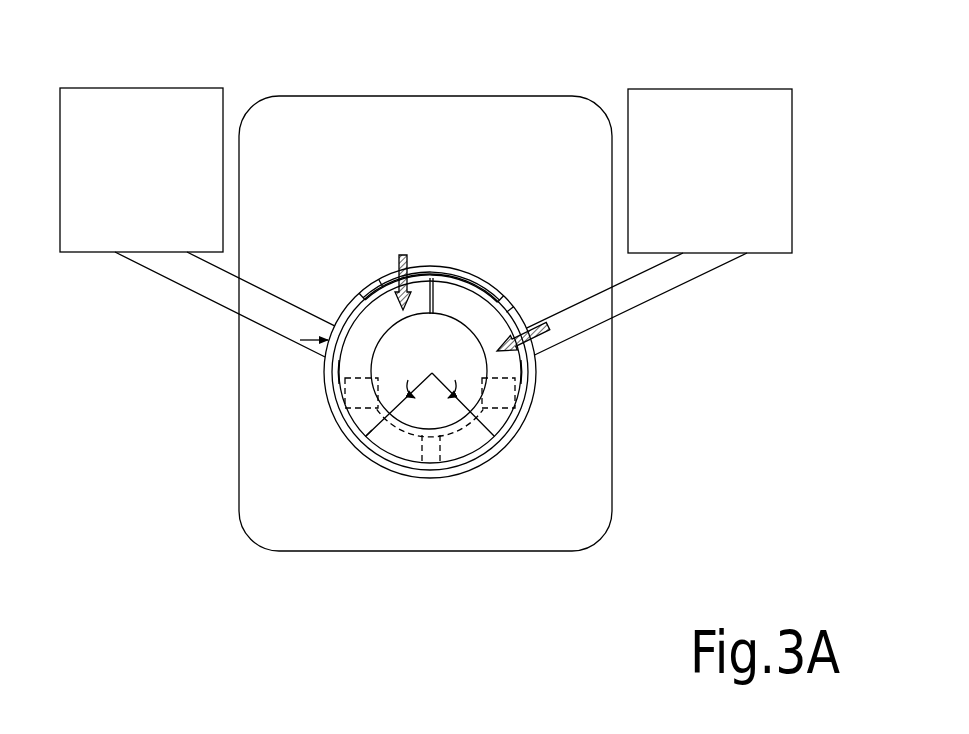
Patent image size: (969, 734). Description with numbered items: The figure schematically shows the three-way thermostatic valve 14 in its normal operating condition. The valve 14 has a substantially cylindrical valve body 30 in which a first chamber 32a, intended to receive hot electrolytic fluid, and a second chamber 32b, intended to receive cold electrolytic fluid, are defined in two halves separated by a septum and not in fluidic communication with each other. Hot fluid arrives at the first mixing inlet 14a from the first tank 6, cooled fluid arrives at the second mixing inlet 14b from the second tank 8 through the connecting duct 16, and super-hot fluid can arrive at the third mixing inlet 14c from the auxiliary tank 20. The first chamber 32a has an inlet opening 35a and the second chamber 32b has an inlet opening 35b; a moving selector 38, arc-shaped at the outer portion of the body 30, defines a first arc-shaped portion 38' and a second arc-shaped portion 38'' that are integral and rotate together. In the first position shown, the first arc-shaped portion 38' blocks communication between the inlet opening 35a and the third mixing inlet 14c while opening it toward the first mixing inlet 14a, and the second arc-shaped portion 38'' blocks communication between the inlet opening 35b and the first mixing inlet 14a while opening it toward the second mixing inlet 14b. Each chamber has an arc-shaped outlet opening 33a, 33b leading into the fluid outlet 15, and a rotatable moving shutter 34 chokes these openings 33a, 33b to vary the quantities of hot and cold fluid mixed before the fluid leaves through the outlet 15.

The first tank 6 is at (540, 108).
The second tank 8 is at (675, 105).
The auxiliary tank 20 is at (140, 100).
The connecting duct 16 is at (663, 283).
The valve body 30 is at (520, 430).
The thermostatic valve 14 is at (377, 474).
The first mixing inlet 14a is at (432, 260).
The second mixing inlet 14b is at (521, 316).
The third mixing inlet 14c is at (300, 340).
The fluid outlet 15 is at (430, 458).
The first chamber 32a is at (347, 365).
The second chamber 32b is at (514, 369).
The outlet opening 33a is at (340, 438).
The outlet opening 33b is at (477, 445).
The moving shutter 34 is at (366, 426).
The inlet opening 35a is at (381, 283).
The inlet opening 35b is at (510, 306).
The moving selector 38 is at (431, 238).
The first arc-shaped portion 38' is at (330, 279).
The second arc-shaped portion 38'' is at (498, 247).